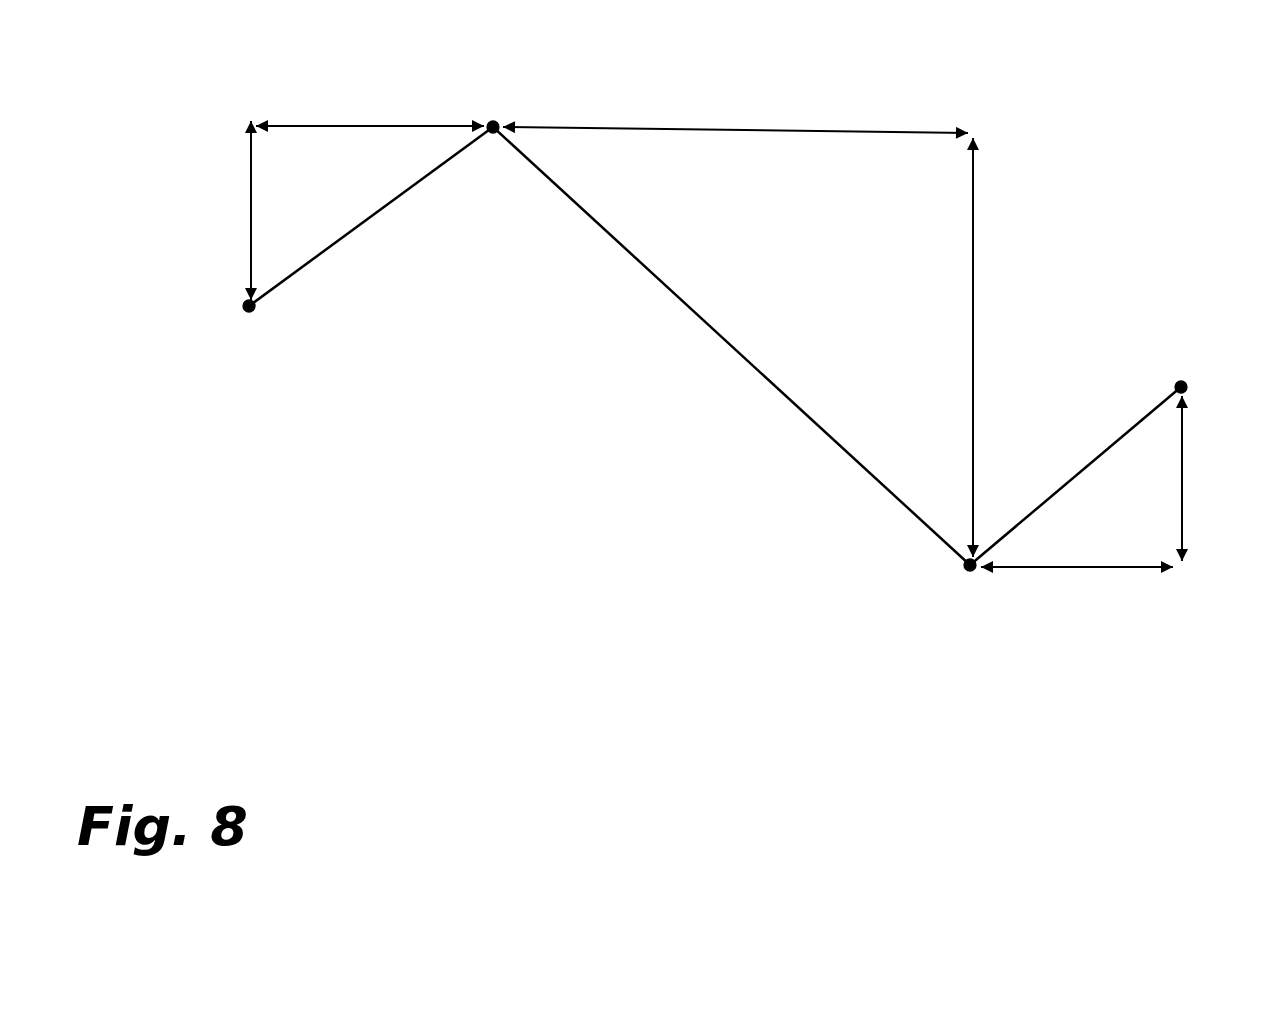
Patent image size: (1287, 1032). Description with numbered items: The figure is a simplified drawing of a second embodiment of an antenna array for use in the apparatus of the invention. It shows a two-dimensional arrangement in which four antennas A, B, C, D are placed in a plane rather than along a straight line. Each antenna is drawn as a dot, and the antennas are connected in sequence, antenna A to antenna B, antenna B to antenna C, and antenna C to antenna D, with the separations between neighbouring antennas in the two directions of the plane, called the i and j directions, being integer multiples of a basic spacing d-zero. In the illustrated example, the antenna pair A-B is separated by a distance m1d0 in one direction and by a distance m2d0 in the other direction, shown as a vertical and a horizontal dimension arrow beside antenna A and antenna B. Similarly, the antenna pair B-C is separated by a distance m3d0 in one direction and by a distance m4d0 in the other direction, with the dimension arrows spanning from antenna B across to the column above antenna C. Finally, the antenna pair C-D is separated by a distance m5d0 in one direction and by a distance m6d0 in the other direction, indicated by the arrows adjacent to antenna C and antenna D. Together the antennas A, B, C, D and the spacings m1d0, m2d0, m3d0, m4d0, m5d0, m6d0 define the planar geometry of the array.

The antenna A is at (234, 331).
The antenna B is at (484, 83).
The antenna C is at (953, 594).
The antenna D is at (1172, 347).
The separation between antennas A and B in one direction m1d0 is at (180, 210).
The separation between antennas A and B in the other direction m2d0 is at (370, 79).
The separation between antennas B and C in one direction m3d0 is at (735, 82).
The separation between antennas B and C in the other direction m4d0 is at (1015, 347).
The separation between antennas C and D in one direction m5d0 is at (1077, 595).
The separation between antennas C and D in the other direction m6d0 is at (1225, 478).